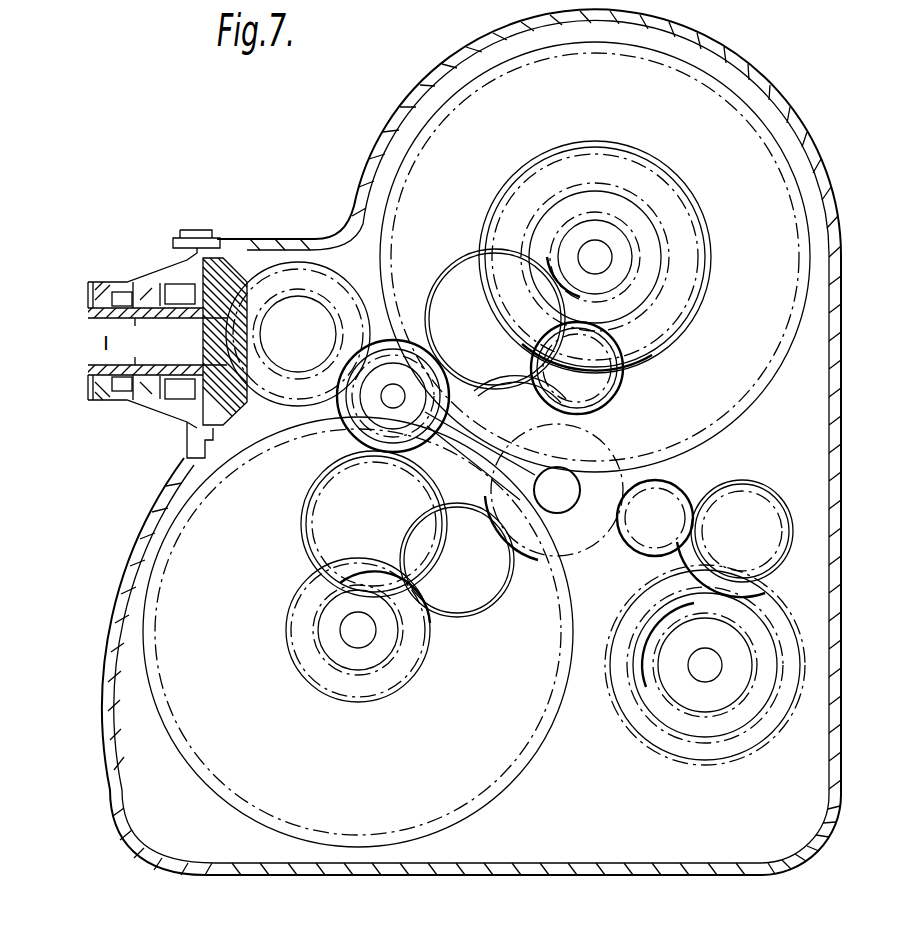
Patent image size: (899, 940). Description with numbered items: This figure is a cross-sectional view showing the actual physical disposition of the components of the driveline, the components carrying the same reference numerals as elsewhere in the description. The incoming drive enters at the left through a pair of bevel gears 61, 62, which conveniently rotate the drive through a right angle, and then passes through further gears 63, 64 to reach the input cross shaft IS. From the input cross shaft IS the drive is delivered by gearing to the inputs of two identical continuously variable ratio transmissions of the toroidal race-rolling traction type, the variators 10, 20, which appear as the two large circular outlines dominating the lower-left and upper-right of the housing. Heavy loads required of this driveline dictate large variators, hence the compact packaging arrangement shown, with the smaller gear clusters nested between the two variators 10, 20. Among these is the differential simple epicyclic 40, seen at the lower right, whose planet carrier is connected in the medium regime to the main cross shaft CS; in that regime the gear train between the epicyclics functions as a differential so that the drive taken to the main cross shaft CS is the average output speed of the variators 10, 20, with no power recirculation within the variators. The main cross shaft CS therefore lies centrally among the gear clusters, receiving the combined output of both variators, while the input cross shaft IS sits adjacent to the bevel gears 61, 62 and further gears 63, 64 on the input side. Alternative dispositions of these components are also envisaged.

The variator 10 is at (505, 778).
The variator 20 is at (417, 138).
The differential simple epicyclic 40 is at (710, 765).
The bevel gear 61 is at (236, 262).
The bevel gear 62 is at (292, 262).
The gear 63 is at (300, 398).
The gear 64 is at (433, 362).
The input cross shaft IS is at (395, 384).
The main cross shaft CS is at (572, 490).